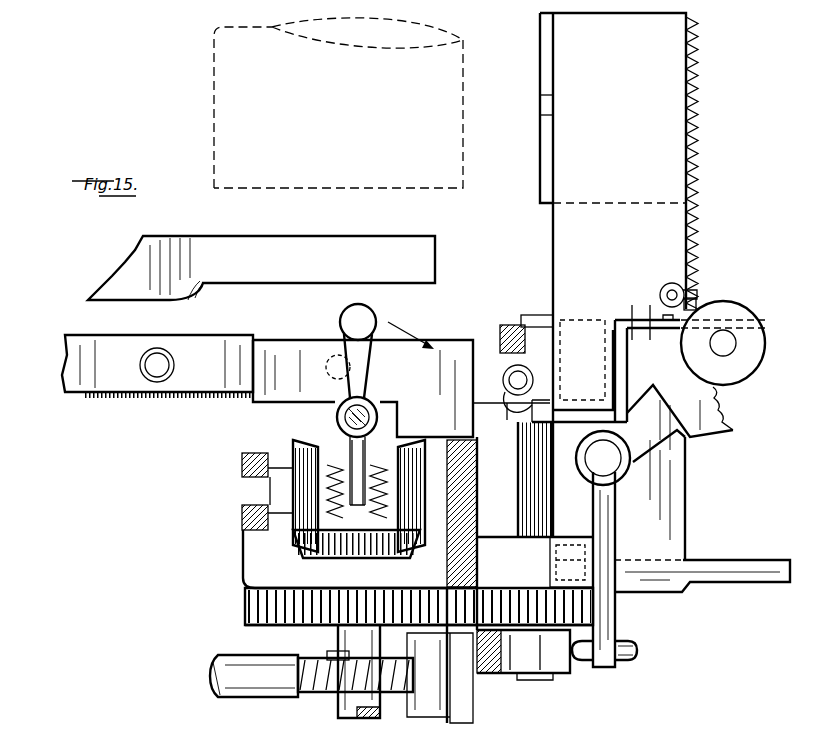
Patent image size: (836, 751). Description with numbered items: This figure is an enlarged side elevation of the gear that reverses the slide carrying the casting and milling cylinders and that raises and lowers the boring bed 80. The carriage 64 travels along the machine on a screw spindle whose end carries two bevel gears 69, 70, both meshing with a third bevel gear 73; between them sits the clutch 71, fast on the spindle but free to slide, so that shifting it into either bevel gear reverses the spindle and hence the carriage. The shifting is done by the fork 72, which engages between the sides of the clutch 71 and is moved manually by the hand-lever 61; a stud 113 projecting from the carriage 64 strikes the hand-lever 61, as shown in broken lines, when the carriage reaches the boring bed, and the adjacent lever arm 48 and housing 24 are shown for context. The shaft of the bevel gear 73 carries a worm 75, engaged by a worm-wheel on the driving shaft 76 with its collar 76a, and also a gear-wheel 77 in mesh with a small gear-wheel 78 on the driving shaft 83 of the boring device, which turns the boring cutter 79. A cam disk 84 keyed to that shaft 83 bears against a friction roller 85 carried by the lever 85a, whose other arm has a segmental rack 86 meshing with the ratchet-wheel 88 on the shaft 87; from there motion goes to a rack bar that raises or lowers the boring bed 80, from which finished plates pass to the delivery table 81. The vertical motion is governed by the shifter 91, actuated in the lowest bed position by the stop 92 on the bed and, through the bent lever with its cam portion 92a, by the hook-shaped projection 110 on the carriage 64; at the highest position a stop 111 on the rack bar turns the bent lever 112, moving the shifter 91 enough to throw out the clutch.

The carriage housing 24 is at (222, 100).
The lever arm 48 is at (437, 270).
The hand-lever 61 is at (376, 312).
The carriage 64 is at (115, 397).
The bevel gear 69 is at (290, 465).
The bevel gear 70 is at (415, 462).
The clutch 71 is at (375, 440).
The fork 72 is at (340, 424).
The third bevel gear 73 is at (300, 545).
The worm 75 is at (292, 660).
The driving shaft 76 is at (222, 660).
The shaft collar 76a is at (332, 658).
The gear-wheel 77 is at (243, 601).
The small gear-wheel 78 is at (492, 662).
The boring cutter 79 is at (586, 360).
The boring bed 80 is at (540, 180).
The delivery table 81 is at (758, 582).
The driving shaft of the boring device 83 is at (535, 484).
The cam disk 84 is at (577, 668).
The friction roller 85 is at (638, 645).
The lever 85a is at (608, 538).
The segmental rack 86 is at (715, 432).
The shaft 87 is at (735, 353).
The ratchet-wheel 88 is at (736, 312).
The shifter 91 is at (670, 330).
The stop 92 is at (540, 104).
The cam 92a is at (512, 398).
The hook-shaped projection 110 is at (372, 347).
The stop 111 is at (692, 305).
The bent lever 112 is at (665, 287).
The stud 113 is at (160, 378).